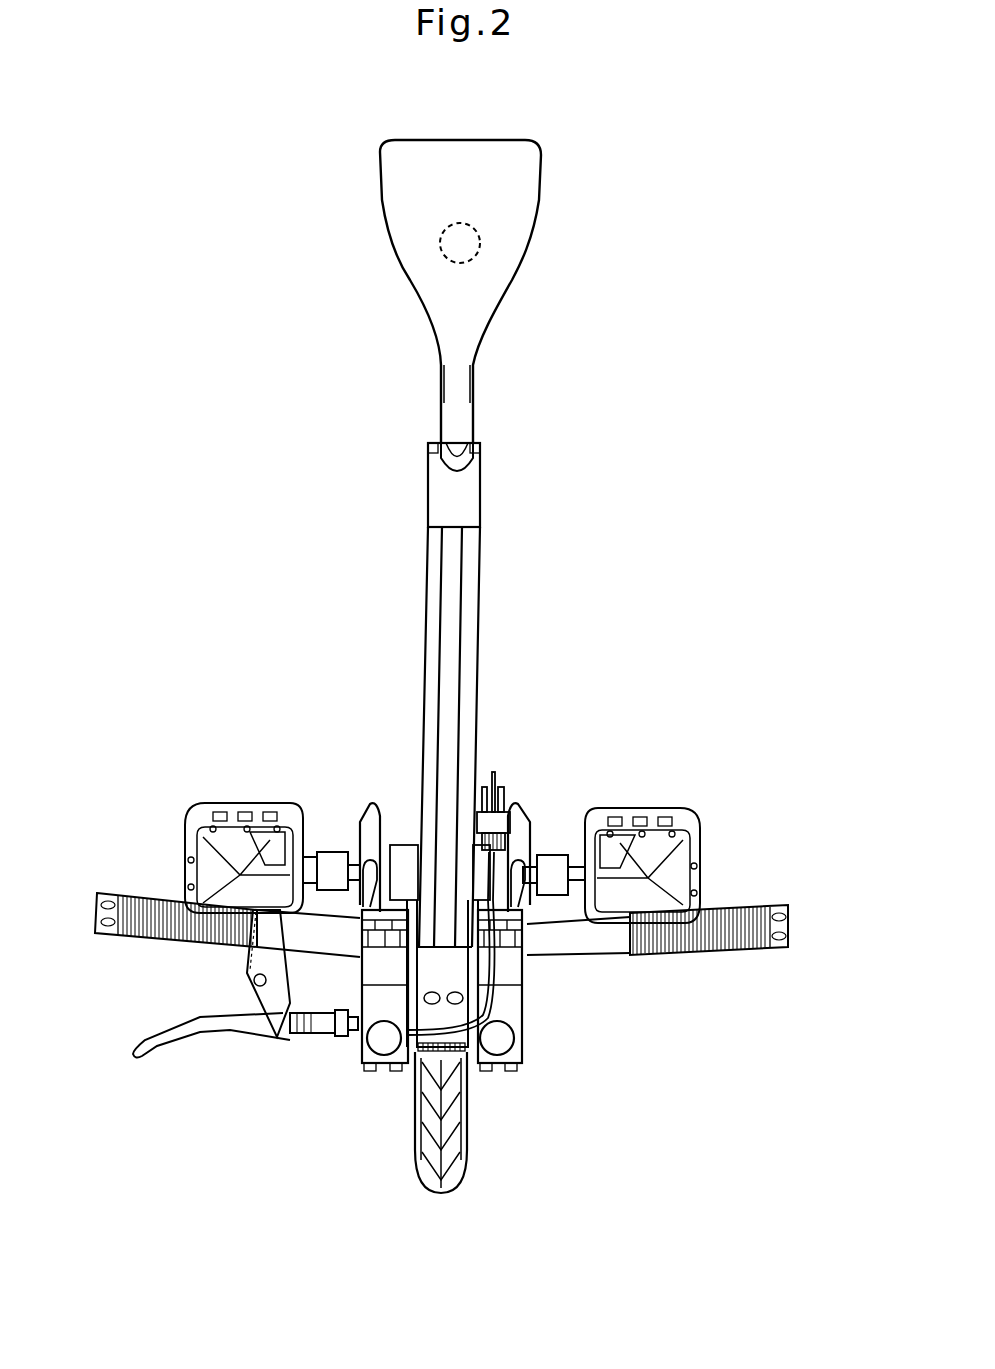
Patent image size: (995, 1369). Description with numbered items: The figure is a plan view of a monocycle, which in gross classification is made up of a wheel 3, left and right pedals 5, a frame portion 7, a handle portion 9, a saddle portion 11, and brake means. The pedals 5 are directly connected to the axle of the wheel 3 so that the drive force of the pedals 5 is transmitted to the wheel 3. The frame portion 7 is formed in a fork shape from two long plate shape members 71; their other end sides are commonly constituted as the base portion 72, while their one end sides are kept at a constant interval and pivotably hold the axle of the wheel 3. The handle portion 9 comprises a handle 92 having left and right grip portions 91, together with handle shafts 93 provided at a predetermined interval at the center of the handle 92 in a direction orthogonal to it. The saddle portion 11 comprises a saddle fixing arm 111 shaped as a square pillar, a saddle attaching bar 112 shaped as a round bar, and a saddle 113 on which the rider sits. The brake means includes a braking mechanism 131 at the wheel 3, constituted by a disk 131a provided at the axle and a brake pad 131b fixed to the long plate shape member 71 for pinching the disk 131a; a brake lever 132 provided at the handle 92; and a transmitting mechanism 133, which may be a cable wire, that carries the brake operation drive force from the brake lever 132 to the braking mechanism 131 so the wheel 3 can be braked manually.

The wheel 3 is at (451, 1185).
The pedals 5 is at (185, 845).
The frame portion 7 is at (300, 1088).
The handle portion 9 is at (400, 1210).
The saddle portion 11 is at (690, 180).
The long plate shape member 71 is at (358, 820).
The base portion 72 is at (362, 978).
The grip portion 91 is at (158, 946).
The handle 92 is at (615, 935).
The handle shaft 93 is at (382, 1038).
The saddle fixing arm 111 is at (480, 555).
The saddle attaching bar 112 is at (478, 250).
The saddle 113 is at (518, 178).
The braking mechanism 131 is at (655, 640).
The disk 131a is at (500, 773).
The brake pad 131b is at (508, 800).
The brake lever 132 is at (212, 1032).
The transmitting mechanism 133 is at (477, 947).